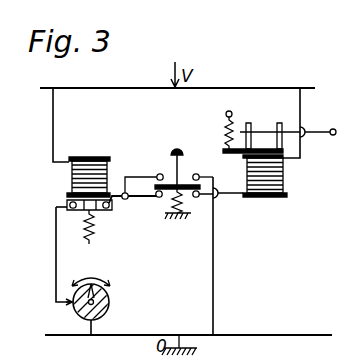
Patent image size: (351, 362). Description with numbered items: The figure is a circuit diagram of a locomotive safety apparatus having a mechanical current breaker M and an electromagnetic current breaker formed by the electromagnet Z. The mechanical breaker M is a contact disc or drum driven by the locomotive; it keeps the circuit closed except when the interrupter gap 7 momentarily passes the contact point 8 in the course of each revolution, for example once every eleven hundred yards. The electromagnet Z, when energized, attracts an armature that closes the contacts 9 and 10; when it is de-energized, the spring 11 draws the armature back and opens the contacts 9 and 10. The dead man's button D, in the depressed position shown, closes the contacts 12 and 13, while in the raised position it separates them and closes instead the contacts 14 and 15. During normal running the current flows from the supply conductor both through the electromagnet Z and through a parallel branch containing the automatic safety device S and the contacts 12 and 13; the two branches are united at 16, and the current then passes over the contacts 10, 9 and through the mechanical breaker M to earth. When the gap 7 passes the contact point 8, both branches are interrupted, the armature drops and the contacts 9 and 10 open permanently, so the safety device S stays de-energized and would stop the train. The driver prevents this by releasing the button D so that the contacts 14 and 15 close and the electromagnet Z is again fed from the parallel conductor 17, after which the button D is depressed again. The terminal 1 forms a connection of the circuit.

The contact terminal 1 is at (314, 136).
The interrupter gap 7 is at (91, 273).
The contact point 8 is at (72, 305).
The contact 9 is at (75, 209).
The contact 10 is at (110, 207).
The spring 11 is at (95, 234).
The contact 12 is at (159, 199).
The contact 13 is at (197, 199).
The contact 14 is at (156, 182).
The contact 15 is at (198, 175).
The junction point 16 is at (124, 190).
The parallel conductor 17 is at (214, 272).
The electromagnet Z is at (79, 177).
The automatic safety device S is at (259, 176).
The dead man's button D is at (178, 159).
The mechanical current breaker M is at (93, 300).